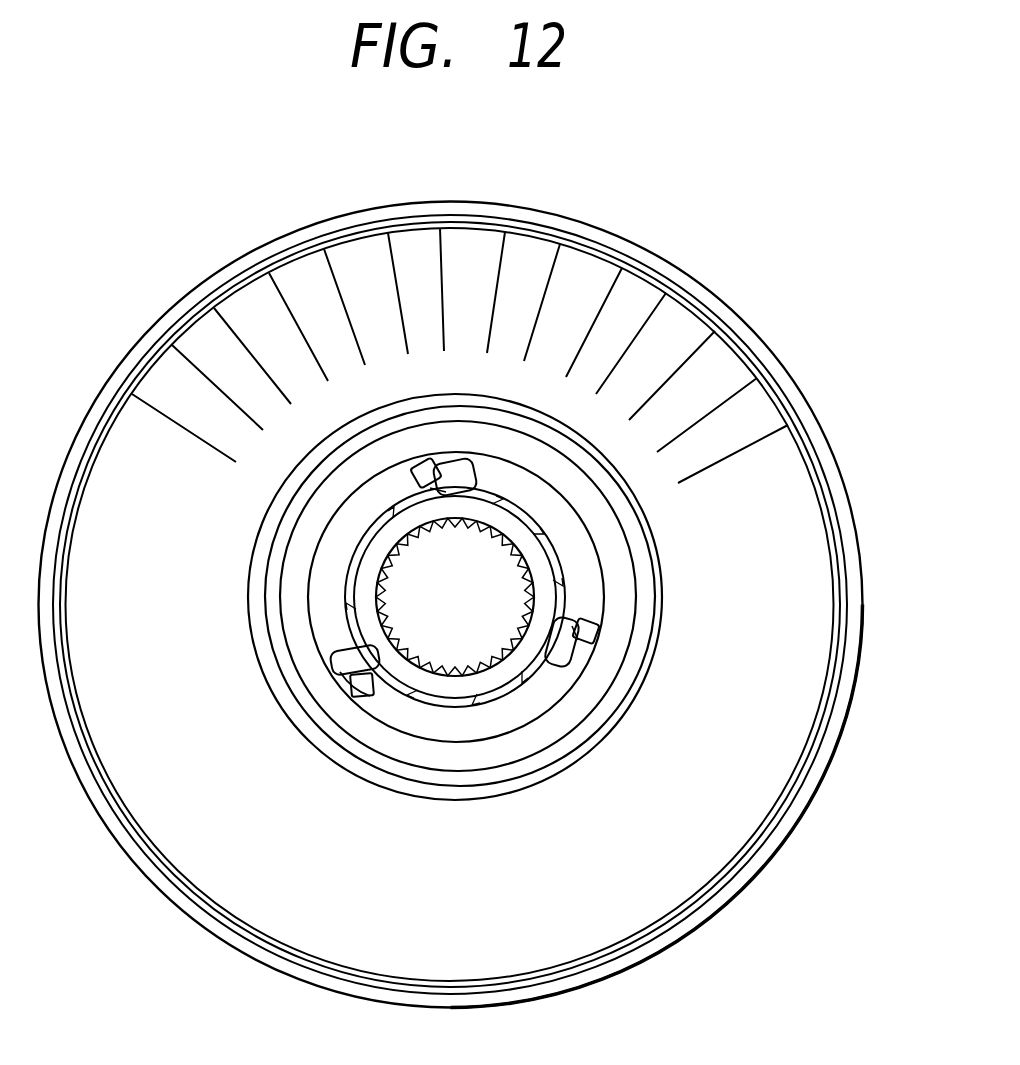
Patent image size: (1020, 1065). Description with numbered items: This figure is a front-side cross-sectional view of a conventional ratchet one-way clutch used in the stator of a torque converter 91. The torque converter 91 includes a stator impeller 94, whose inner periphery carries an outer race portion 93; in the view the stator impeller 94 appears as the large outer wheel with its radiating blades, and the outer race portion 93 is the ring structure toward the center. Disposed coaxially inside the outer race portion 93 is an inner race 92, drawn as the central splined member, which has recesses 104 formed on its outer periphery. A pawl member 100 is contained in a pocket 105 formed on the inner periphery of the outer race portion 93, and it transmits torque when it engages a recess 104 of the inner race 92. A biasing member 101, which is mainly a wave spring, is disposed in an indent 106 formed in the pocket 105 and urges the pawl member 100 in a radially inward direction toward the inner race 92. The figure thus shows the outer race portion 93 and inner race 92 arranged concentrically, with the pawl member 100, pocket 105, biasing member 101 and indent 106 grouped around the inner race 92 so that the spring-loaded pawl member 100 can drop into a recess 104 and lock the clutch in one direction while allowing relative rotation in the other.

The torque converter 91 is at (670, 208).
The stator impeller 94 is at (252, 308).
The outer race portion 93 is at (328, 598).
The inner race 92 is at (397, 528).
The recess 104 is at (473, 700).
The pawl member 100 is at (338, 657).
The pocket 105 is at (355, 692).
The biasing member 101 is at (358, 690).
The indent 106 is at (363, 693).